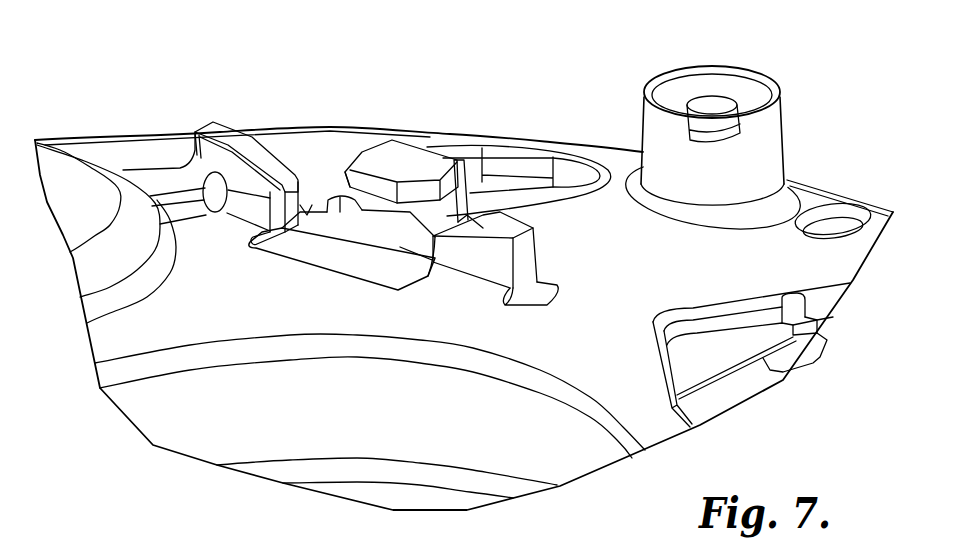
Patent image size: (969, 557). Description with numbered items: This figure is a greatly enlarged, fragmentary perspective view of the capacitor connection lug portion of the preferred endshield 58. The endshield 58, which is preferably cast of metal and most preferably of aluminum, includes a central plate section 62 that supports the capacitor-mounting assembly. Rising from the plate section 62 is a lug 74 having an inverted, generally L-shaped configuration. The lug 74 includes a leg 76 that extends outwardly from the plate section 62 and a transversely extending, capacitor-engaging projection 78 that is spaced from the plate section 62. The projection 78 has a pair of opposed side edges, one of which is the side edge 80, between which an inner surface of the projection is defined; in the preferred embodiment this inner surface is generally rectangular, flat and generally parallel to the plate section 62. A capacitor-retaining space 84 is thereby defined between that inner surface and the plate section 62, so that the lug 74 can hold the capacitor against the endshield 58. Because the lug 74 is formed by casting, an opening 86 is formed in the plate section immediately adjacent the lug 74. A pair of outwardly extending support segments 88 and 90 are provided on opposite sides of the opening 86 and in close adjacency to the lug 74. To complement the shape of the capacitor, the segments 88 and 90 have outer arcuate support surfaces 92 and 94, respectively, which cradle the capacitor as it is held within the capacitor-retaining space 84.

The endshield 58 is at (833, 148).
The central plate section 62 is at (618, 160).
The lug 74 is at (408, 106).
The leg 76 is at (457, 200).
The capacitor-engaging projection 78 is at (385, 153).
The side edge 80 is at (427, 210).
The capacitor-retaining space 84 is at (393, 213).
The opening 86 is at (400, 287).
The support segment 88 is at (210, 128).
The support segment 90 is at (531, 232).
The arcuate support surface 92 is at (262, 157).
The arcuate support surface 94 is at (463, 223).